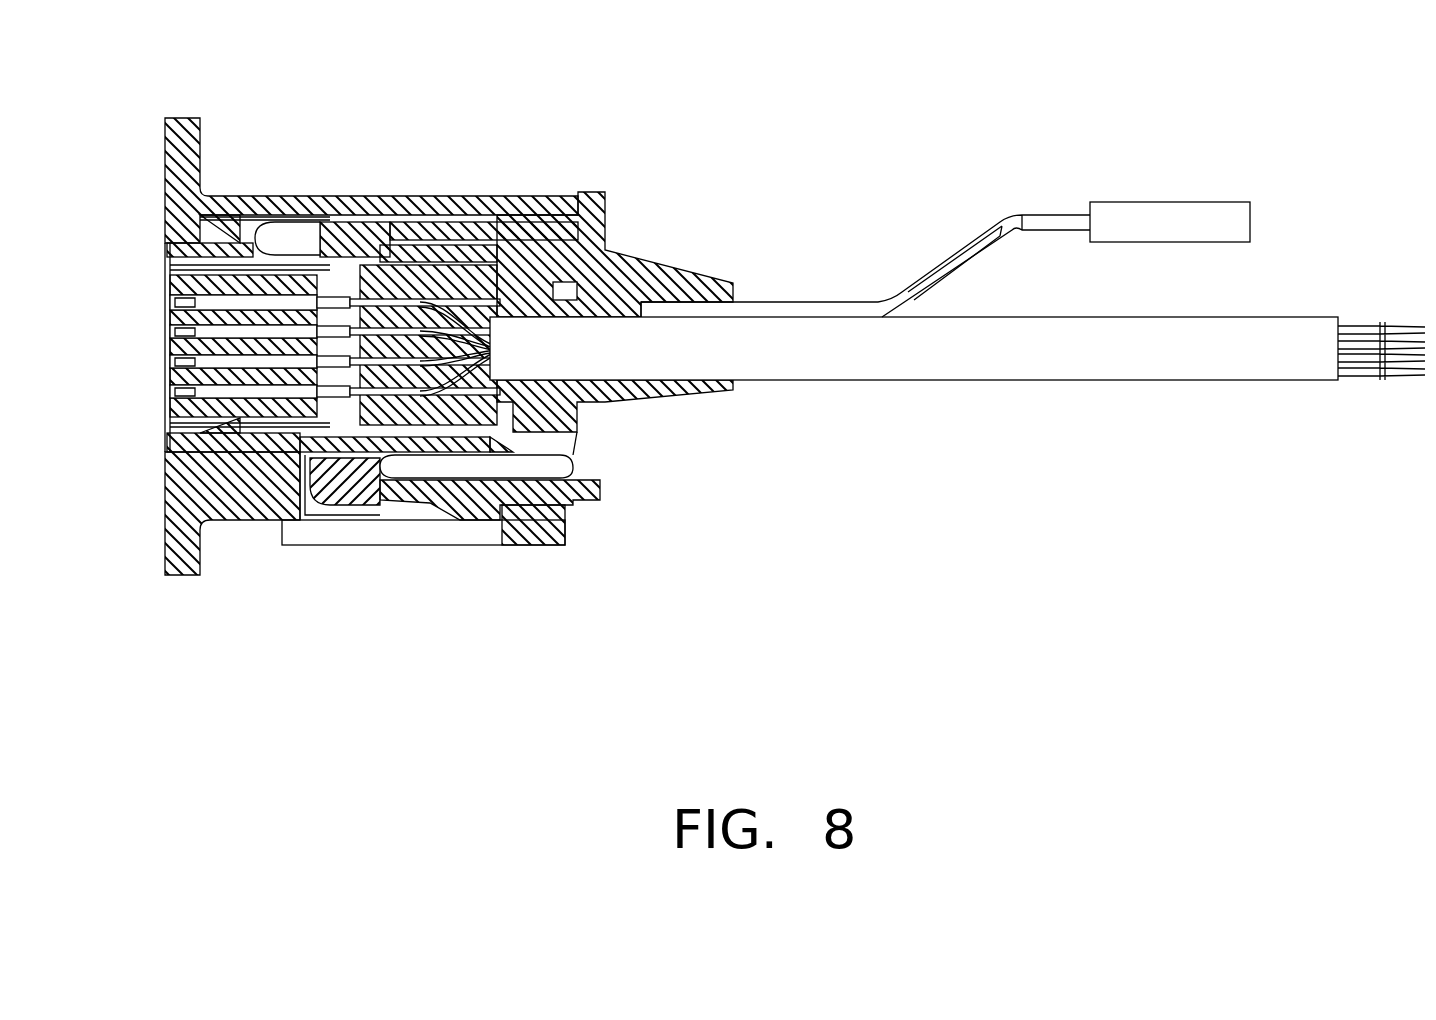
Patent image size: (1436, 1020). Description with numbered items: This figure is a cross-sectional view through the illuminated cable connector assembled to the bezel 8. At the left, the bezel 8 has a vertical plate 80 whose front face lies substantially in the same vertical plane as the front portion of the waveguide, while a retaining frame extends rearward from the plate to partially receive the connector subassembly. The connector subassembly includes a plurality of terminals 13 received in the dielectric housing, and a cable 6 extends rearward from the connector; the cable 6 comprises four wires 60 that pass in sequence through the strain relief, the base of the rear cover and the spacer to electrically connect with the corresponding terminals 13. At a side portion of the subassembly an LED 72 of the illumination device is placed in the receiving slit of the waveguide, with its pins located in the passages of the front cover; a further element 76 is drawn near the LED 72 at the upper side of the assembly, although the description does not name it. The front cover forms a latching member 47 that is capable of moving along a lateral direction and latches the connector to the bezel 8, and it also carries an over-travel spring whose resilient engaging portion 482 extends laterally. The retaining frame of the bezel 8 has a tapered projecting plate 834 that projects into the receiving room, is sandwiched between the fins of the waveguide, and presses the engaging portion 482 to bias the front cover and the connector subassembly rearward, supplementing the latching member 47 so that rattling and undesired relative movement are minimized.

The bezel 8 is at (228, 207).
The vertical plate 80 is at (177, 204).
The latch 76 is at (266, 217).
The LED 72 is at (273, 238).
The terminals 13 is at (355, 300).
The wires 60 is at (468, 285).
The cable 6 is at (800, 347).
The projecting plate 834 is at (247, 487).
The engaging portion 482 is at (310, 488).
The latching member 47 is at (483, 497).